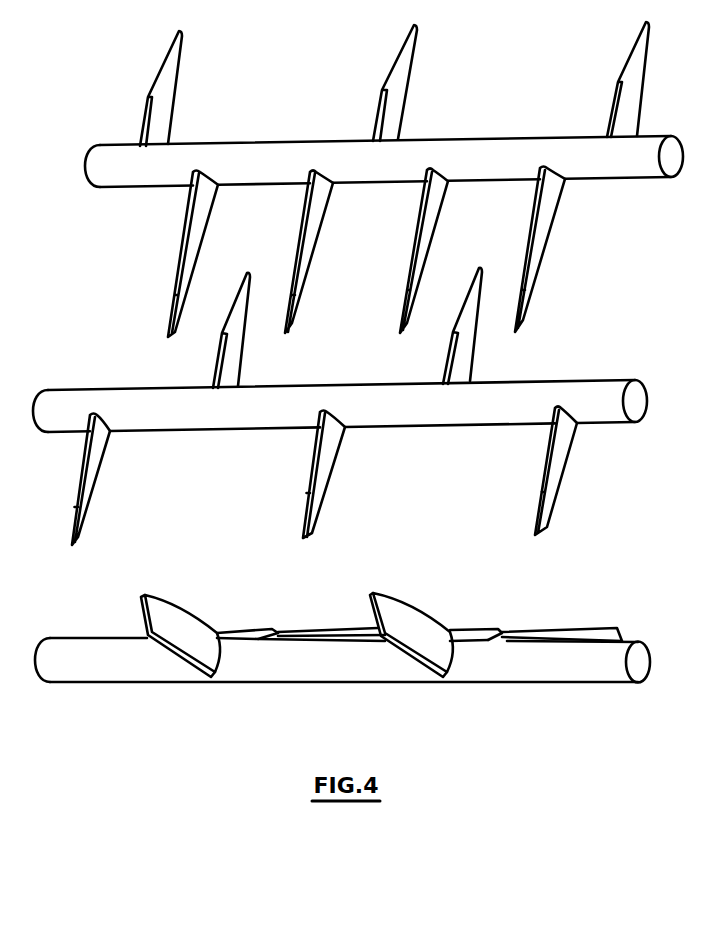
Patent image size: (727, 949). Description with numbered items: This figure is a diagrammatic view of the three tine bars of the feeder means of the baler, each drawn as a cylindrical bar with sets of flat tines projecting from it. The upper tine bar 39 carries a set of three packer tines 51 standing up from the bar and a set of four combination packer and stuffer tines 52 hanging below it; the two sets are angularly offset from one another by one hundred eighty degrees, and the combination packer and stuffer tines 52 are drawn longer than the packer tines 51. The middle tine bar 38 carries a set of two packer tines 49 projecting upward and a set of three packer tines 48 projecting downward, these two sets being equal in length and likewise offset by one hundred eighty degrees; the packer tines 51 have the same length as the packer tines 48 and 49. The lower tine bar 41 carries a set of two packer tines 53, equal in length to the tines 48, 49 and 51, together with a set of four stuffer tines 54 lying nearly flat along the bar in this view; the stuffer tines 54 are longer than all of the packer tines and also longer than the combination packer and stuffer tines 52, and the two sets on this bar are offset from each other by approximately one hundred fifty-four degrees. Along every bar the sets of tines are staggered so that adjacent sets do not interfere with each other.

The tine bar 38 is at (610, 382).
The tine bar 39 is at (628, 178).
The tine bar 41 is at (612, 676).
The packer tines 48 is at (313, 505).
The packer tines 49 is at (242, 345).
The packer tines 51 is at (388, 95).
The combination packer and stuffer tines 52 is at (203, 240).
The packer tines 53 is at (372, 593).
The stuffer tines 54 is at (278, 633).